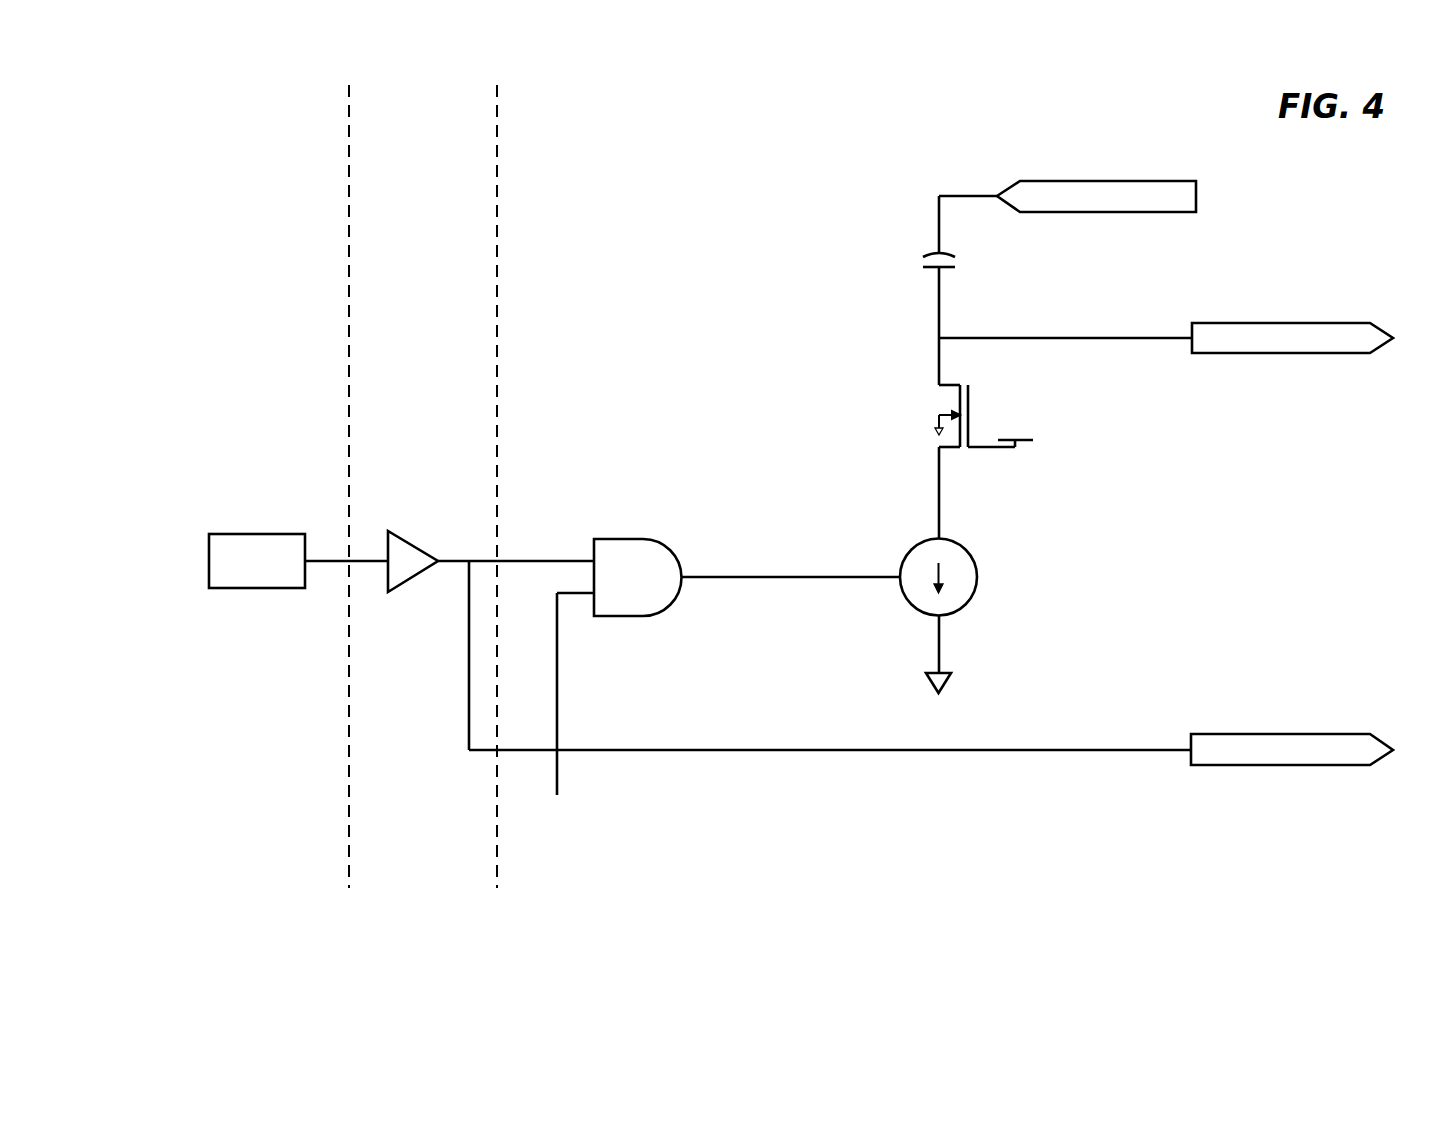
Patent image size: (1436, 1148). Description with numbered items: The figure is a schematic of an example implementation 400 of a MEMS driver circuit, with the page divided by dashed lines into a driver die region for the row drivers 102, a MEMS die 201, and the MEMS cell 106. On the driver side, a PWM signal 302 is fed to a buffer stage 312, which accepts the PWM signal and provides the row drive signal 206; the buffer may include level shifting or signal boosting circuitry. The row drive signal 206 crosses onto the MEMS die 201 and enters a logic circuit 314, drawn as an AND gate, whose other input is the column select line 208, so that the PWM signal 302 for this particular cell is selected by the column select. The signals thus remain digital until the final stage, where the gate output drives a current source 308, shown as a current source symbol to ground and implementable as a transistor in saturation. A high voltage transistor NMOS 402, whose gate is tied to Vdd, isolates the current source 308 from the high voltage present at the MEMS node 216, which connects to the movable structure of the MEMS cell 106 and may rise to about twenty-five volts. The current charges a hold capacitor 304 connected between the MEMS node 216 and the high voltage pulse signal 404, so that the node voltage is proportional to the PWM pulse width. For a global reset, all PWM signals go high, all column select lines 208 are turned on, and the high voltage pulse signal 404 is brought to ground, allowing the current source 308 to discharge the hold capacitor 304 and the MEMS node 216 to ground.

The row drivers 102 is at (297, 186).
The MEMS die 201 is at (426, 186).
The MEMS cell 106 is at (808, 187).
The PWM signal 302 is at (257, 589).
The buffer stage 312 is at (430, 548).
The logic circuit 314 is at (633, 539).
The column select line 208 is at (573, 877).
The current source 308 is at (906, 545).
The high voltage transistor NMOS 402 is at (1023, 442).
The hold capacitor 304 is at (948, 268).
The high voltage pulse signal 404 is at (1165, 213).
The MEMS node 216 is at (1338, 354).
The row drive signal 206 is at (1280, 733).
The example implementation of the MEMS driver circuit 400 is at (1033, 876).